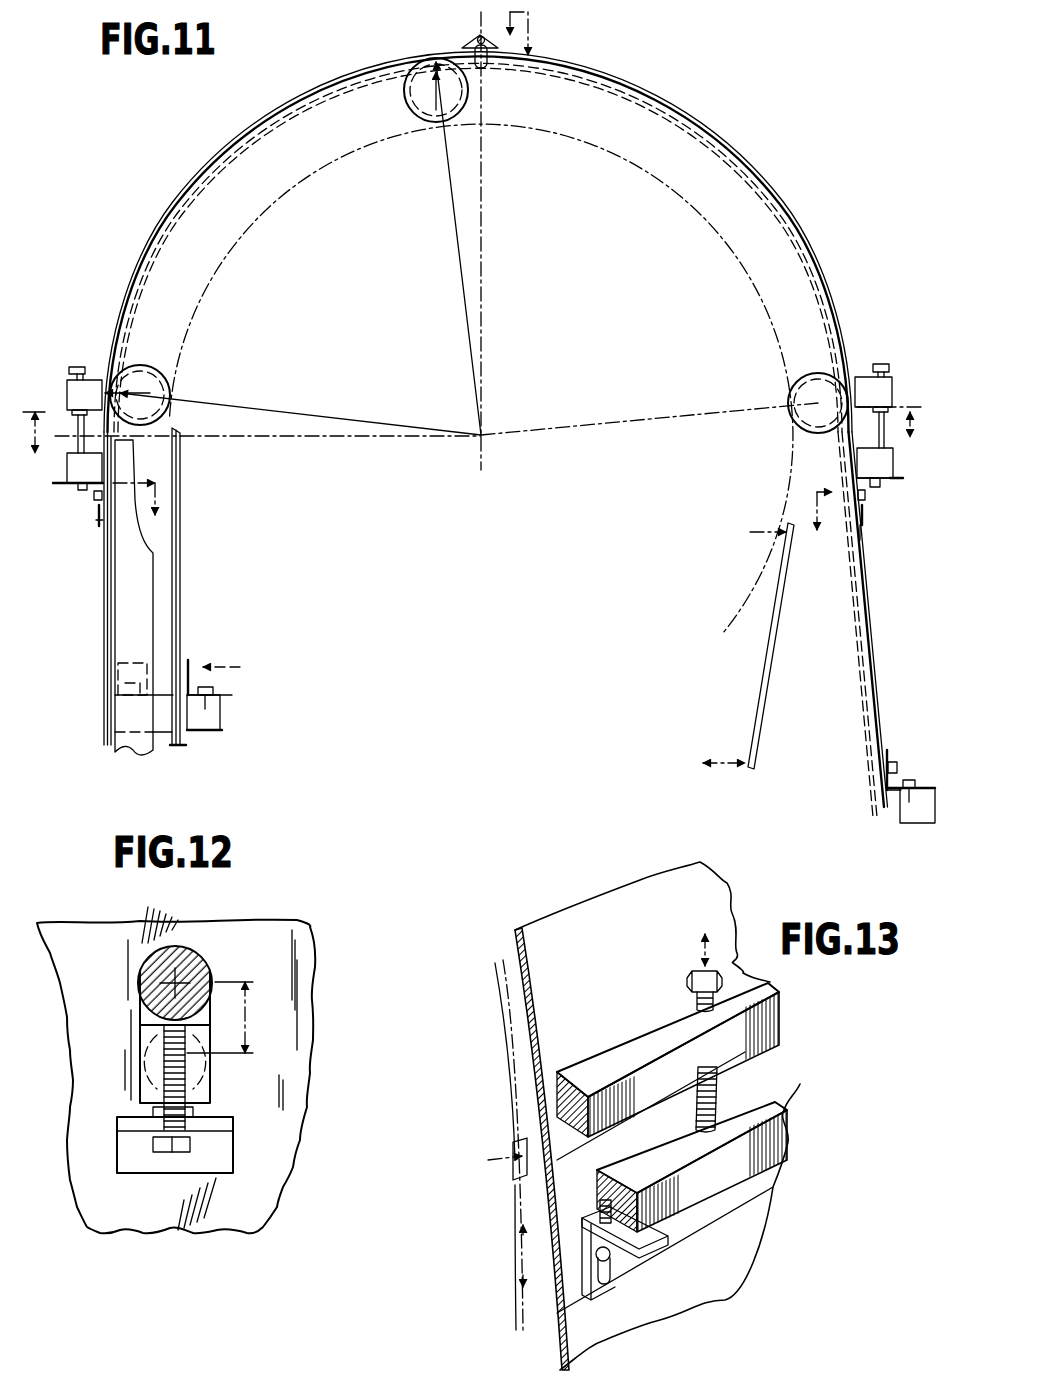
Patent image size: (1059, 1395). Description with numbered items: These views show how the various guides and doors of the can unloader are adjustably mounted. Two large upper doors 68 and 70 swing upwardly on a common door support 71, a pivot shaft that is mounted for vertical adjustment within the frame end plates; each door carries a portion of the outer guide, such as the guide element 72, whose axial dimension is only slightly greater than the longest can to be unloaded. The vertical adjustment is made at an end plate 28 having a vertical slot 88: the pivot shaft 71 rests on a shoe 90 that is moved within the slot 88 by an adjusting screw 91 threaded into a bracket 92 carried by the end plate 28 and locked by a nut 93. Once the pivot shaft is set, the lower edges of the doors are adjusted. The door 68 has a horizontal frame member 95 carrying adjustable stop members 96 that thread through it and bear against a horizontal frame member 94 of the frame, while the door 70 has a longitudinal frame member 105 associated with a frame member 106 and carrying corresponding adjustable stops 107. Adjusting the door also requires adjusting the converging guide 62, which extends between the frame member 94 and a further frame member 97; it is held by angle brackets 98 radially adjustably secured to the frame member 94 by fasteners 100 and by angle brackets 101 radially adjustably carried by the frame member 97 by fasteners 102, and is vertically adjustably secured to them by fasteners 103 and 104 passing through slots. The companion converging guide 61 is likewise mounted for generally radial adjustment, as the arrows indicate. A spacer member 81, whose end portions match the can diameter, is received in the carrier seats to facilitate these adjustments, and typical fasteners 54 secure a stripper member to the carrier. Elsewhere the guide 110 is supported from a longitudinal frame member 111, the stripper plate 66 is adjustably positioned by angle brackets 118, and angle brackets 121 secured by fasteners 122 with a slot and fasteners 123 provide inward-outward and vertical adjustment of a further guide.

In FIG. 12, the end plate 28 is at (303, 985).
In FIG. 11, the fasteners 54 is at (895, 456).
In FIG. 11, the converging guide 61 is at (762, 668).
In FIG. 11, the converging guide 62 is at (876, 686).
In FIG. 13, the converging guide 62 is at (765, 1225).
In FIG. 11, the stripper plate 66 is at (188, 586).
In FIG. 11, the door 68 is at (771, 205).
In FIG. 13, the door 68 is at (743, 951).
In FIG. 11, the door 70 is at (204, 190).
In FIG. 11, the door support (pivot shaft) 71 is at (478, 38).
In FIG. 12, the door support (pivot shaft) 71 is at (206, 957).
In FIG. 13, the guide element 72 is at (697, 886).
In FIG. 11, the spacer member 81 is at (406, 100).
In FIG. 12, the vertical slot 88 is at (208, 1077).
In FIG. 12, the shoe 90 is at (140, 1020).
In FIG. 12, the adjusting screw 91 is at (165, 1062).
In FIG. 12, the bracket 92 is at (220, 1142).
In FIG. 12, the nut 93 is at (153, 1112).
In FIG. 13, the horizontal frame member 94 is at (793, 1112).
In FIG. 11, the horizontal frame member 95 is at (893, 388).
In FIG. 13, the horizontal frame member 95 is at (779, 999).
In FIG. 13, the adjustable stop members 96 is at (735, 1086).
In FIG. 11, the frame member 97 is at (920, 818).
In FIG. 11, the angle brackets 98 is at (866, 528).
In FIG. 13, the angle brackets 98 is at (668, 1242).
In FIG. 11, the fasteners 100 is at (867, 494).
In FIG. 13, the fasteners 100 is at (600, 1218).
In FIG. 11, the angle brackets 101 is at (888, 748).
In FIG. 11, the fasteners 102 is at (906, 781).
In FIG. 11, the fasteners 103 is at (868, 515).
In FIG. 13, the fasteners 103 is at (613, 1262).
In FIG. 11, the fasteners 104 is at (896, 761).
In FIG. 11, the longitudinal frame member 105 is at (100, 378).
In FIG. 11, the frame member 106 is at (67, 464).
In FIG. 11, the adjustable stops 107 is at (66, 394).
In FIG. 11, the guide 110 is at (124, 610).
In FIG. 11, the longitudinal frame member 111 is at (222, 731).
In FIG. 11, the angle brackets 118 is at (222, 695).
In FIG. 11, the angle brackets 121 is at (79, 568).
In FIG. 11, the fasteners 122 is at (96, 503).
In FIG. 11, the fasteners 123 is at (98, 527).